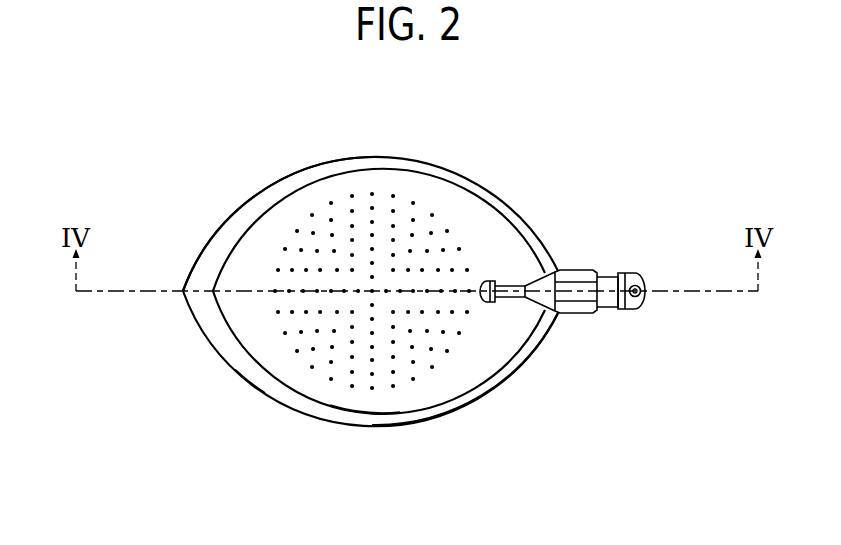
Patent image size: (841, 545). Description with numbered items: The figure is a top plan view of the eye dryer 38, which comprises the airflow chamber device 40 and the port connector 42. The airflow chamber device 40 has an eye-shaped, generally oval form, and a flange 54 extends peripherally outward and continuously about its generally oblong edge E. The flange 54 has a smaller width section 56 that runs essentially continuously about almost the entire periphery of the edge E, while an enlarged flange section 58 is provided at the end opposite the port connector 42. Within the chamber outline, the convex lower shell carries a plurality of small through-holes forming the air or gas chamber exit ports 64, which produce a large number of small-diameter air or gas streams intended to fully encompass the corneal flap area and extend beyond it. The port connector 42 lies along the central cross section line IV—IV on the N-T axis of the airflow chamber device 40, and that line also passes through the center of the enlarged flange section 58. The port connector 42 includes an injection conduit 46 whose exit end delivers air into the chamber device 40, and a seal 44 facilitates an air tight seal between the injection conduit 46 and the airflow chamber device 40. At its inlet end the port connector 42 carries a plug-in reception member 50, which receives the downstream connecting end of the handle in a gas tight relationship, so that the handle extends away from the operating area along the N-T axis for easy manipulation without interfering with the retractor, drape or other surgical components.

The eye dryer 38 is at (447, 160).
The airflow chamber device 40 is at (327, 163).
The port connector 42 is at (580, 268).
The seal 44 is at (487, 280).
The injection conduit 46 is at (513, 283).
The plug-in reception member 50 is at (616, 279).
The flange 54 is at (522, 366).
The smaller width section 56 is at (358, 423).
The enlarged flange section 58 is at (206, 244).
The air or gas chamber exit ports 64 is at (278, 314).
The edge E is at (250, 370).